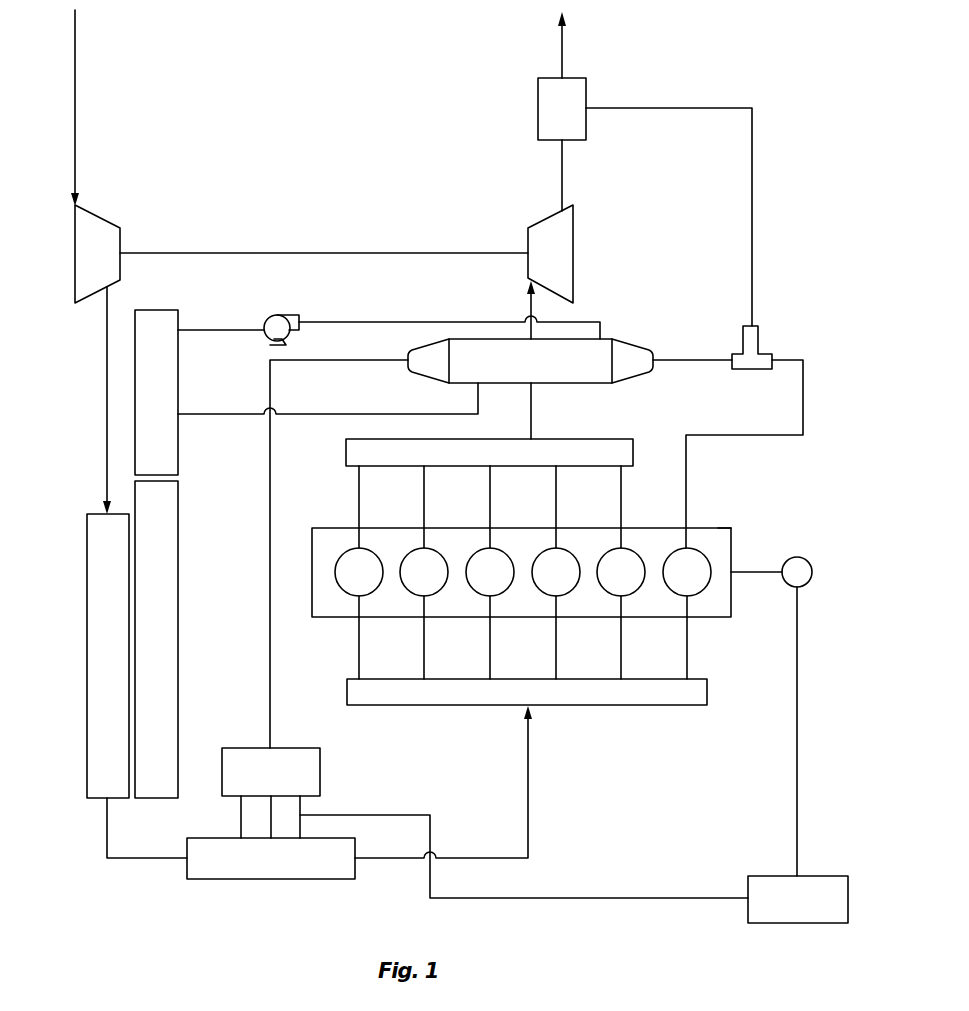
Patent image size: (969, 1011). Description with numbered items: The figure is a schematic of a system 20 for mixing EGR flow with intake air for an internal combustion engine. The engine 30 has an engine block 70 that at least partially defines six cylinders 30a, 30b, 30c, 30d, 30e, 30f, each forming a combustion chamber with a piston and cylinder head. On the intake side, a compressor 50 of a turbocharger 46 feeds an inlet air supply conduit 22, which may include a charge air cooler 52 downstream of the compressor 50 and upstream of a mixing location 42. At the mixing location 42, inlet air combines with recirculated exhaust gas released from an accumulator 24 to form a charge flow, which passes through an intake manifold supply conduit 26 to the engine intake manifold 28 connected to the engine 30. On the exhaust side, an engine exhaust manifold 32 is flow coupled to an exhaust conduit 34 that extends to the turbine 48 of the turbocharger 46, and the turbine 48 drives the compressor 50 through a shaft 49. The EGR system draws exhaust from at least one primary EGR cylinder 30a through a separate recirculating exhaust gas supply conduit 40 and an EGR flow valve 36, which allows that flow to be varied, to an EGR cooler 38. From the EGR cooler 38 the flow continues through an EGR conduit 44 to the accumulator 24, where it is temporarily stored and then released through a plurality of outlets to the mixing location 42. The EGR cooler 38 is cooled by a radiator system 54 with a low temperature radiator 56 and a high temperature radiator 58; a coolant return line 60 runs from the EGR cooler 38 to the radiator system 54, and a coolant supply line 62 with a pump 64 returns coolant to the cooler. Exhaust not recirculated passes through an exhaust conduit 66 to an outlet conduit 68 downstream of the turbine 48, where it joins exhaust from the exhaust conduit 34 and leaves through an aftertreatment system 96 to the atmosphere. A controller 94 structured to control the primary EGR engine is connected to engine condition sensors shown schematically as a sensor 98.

The system 20 is at (616, 787).
The inlet air supply conduit 22 is at (125, 858).
The accumulator 24 is at (285, 748).
The intake manifold supply conduit 26 is at (520, 790).
The engine intake manifold 28 is at (652, 707).
The engine 30 is at (305, 577).
The cylinder 30a is at (697, 587).
The cylinder 30b is at (632, 558).
The cylinder 30c is at (566, 587).
The cylinder 30d is at (501, 558).
The cylinder 30e is at (435, 587).
The cylinder 30f is at (370, 558).
The engine exhaust manifold 32 is at (622, 432).
The exhaust conduit 34 is at (535, 393).
The EGR flow valve 36 is at (760, 333).
The EGR cooler 38 is at (631, 340).
The recirculating exhaust gas supply conduit 40 is at (804, 383).
The mixing location 42 is at (222, 880).
The EGR conduit 44 is at (268, 640).
The turbocharger 46 is at (270, 162).
The turbine 48 is at (563, 268).
The shaft 49 is at (155, 252).
The compressor 50 is at (110, 268).
The charge air cooler 52 is at (87, 597).
The radiator system 54 is at (192, 495).
The low temperature radiator 56 is at (178, 390).
The high temperature radiator 58 is at (178, 606).
The coolant return line 60 is at (327, 416).
The coolant supply line 62 is at (153, 310).
The pump 64 is at (283, 315).
The exhaust conduit 66 is at (752, 218).
The outlet conduit 68 is at (567, 55).
The engine block 70 is at (716, 528).
The controller 94 is at (827, 876).
The aftertreatment system 96 is at (588, 93).
The sensor 98 is at (810, 562).